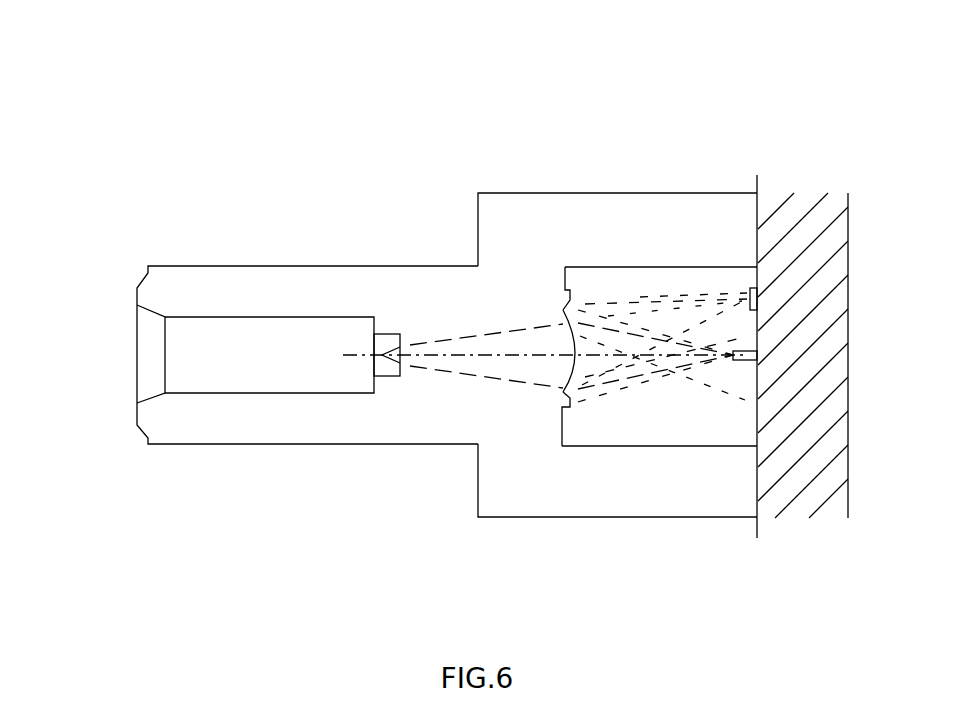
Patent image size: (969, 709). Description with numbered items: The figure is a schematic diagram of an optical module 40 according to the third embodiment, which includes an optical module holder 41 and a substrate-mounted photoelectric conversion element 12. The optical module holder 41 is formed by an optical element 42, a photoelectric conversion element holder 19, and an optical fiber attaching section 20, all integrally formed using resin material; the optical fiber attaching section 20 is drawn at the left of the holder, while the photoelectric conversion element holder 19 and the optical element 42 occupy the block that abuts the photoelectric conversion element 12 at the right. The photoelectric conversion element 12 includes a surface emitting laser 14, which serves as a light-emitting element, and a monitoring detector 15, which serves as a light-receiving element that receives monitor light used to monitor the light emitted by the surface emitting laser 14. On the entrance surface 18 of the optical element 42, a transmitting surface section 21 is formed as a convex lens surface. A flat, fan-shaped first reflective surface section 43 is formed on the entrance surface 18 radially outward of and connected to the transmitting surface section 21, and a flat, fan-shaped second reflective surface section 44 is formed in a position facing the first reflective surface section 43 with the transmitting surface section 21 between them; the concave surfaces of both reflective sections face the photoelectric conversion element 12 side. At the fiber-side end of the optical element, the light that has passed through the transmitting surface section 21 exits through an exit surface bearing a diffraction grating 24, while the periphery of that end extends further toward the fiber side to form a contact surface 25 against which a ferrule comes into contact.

The optical module 40 is at (93, 160).
The optical fiber attaching section 20 is at (282, 266).
The contact surface 25 is at (374, 324).
The diffraction grating 24 is at (397, 371).
The optical module holder 41 is at (423, 266).
The photoelectric conversion element holder 19 is at (577, 193).
The entrance surface 18 is at (573, 446).
The second reflective surface section 44 is at (564, 309).
The transmitting surface section 21 is at (575, 368).
The first reflective surface section 43 is at (563, 394).
The optical element 42 is at (477, 385).
The monitoring detector 15 is at (750, 292).
The surface emitting laser 14 is at (740, 365).
The photoelectric conversion element 12 is at (757, 180).